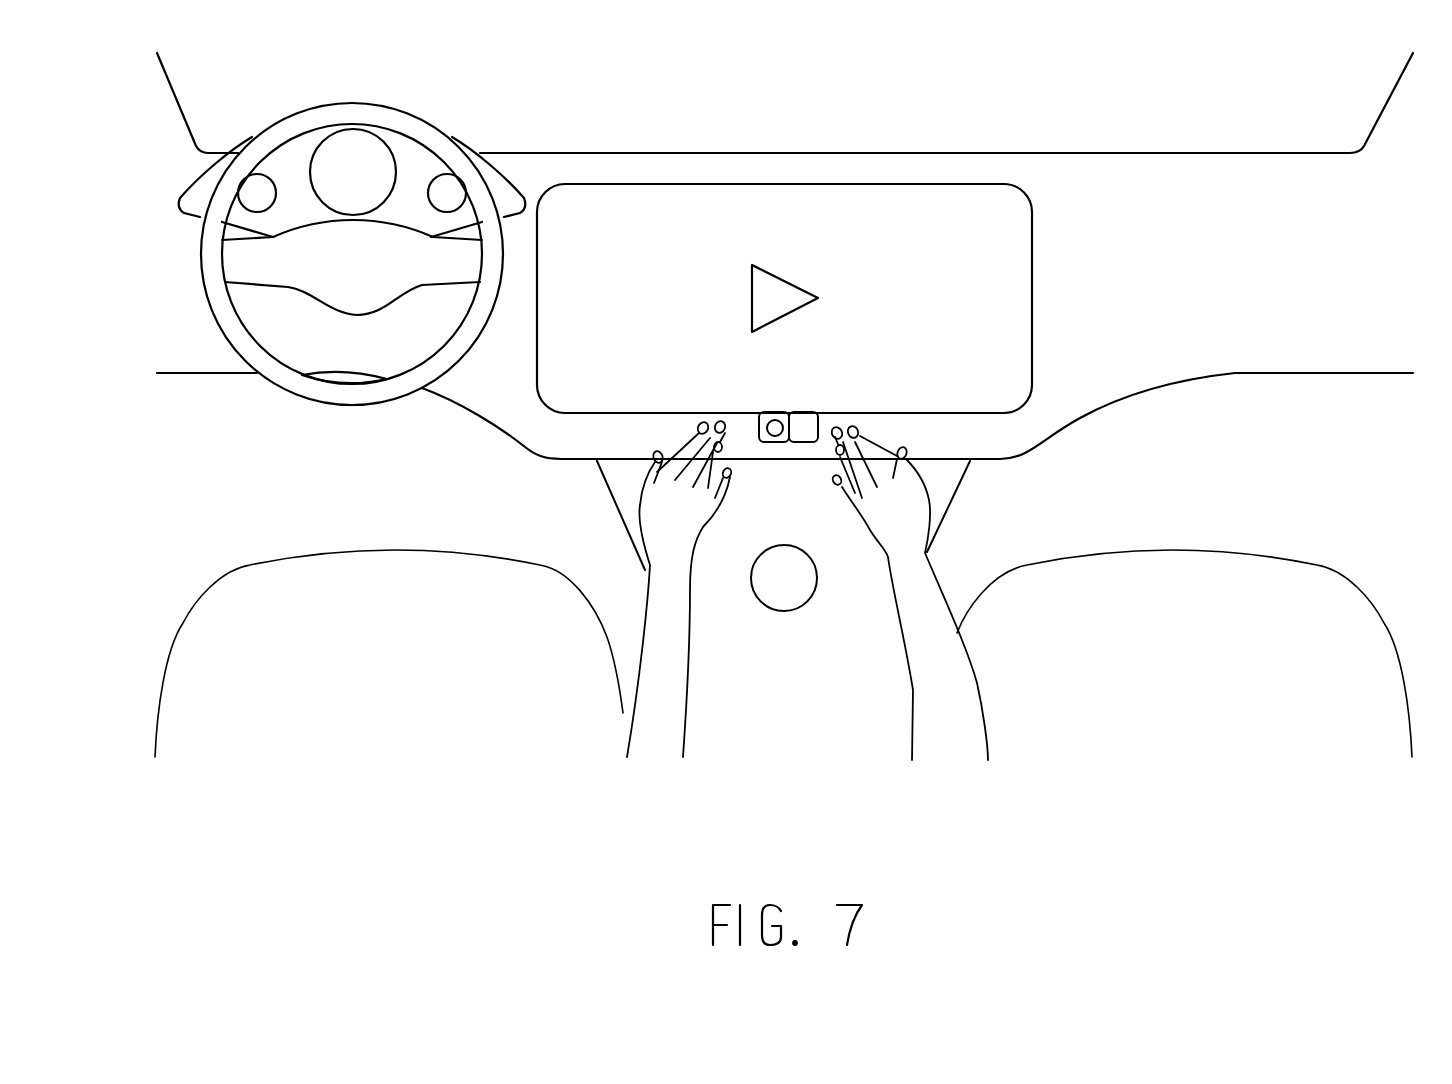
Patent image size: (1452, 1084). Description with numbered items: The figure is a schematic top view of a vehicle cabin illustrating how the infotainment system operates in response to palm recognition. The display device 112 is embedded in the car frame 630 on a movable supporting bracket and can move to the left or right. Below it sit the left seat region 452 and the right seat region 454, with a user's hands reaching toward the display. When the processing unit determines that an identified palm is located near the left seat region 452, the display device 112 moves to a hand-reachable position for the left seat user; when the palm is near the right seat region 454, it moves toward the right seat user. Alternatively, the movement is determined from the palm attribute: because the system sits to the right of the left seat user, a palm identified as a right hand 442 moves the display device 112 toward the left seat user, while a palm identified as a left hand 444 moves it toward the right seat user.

The car frame 630 is at (557, 153).
The display device 112 is at (945, 184).
The right hand 442 is at (630, 513).
The left hand 444 is at (935, 505).
The left seat region 452 is at (322, 553).
The right seat region 454 is at (1213, 550).